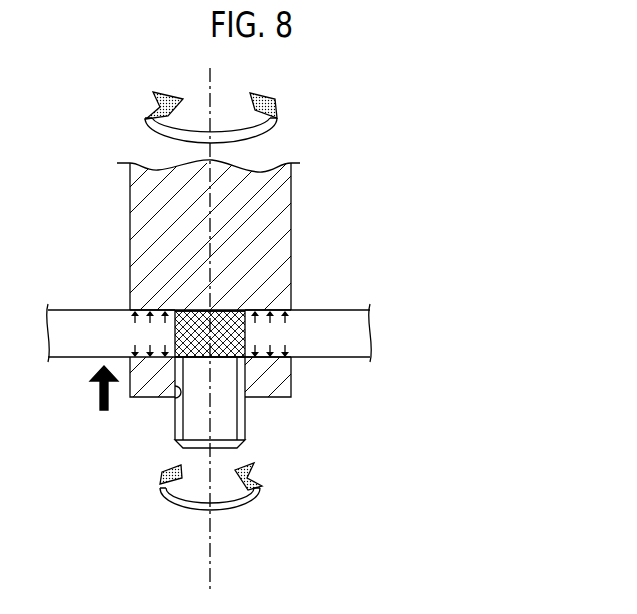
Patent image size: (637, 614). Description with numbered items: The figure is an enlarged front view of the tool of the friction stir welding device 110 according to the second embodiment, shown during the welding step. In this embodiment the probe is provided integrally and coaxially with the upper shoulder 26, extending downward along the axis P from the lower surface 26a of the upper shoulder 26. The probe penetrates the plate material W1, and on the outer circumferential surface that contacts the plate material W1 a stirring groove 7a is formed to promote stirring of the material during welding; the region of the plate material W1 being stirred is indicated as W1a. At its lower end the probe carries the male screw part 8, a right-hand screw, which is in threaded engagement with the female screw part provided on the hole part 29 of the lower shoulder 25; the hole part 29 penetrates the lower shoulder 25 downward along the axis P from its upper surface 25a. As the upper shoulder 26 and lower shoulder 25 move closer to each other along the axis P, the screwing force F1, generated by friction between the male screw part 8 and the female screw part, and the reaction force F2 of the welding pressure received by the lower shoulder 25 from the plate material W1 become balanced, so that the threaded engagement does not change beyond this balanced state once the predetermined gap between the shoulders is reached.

The friction stir welding device 110 is at (306, 301).
The upper shoulder 26 is at (242, 240).
The lower surface of the upper shoulder 26a is at (297, 308).
The stirring groove 7a is at (211, 313).
The male screw part 8 is at (244, 417).
The hole part 29 is at (178, 394).
The lower shoulder 25 is at (255, 397).
The upper surface of the lower shoulder 25a is at (283, 363).
The plate material W1 is at (251, 435).
The joined region of workpiece W1a is at (226, 372).
The axis P is at (207, 563).
The screwing force F1 is at (98, 408).
The reaction force F2 is at (132, 321).